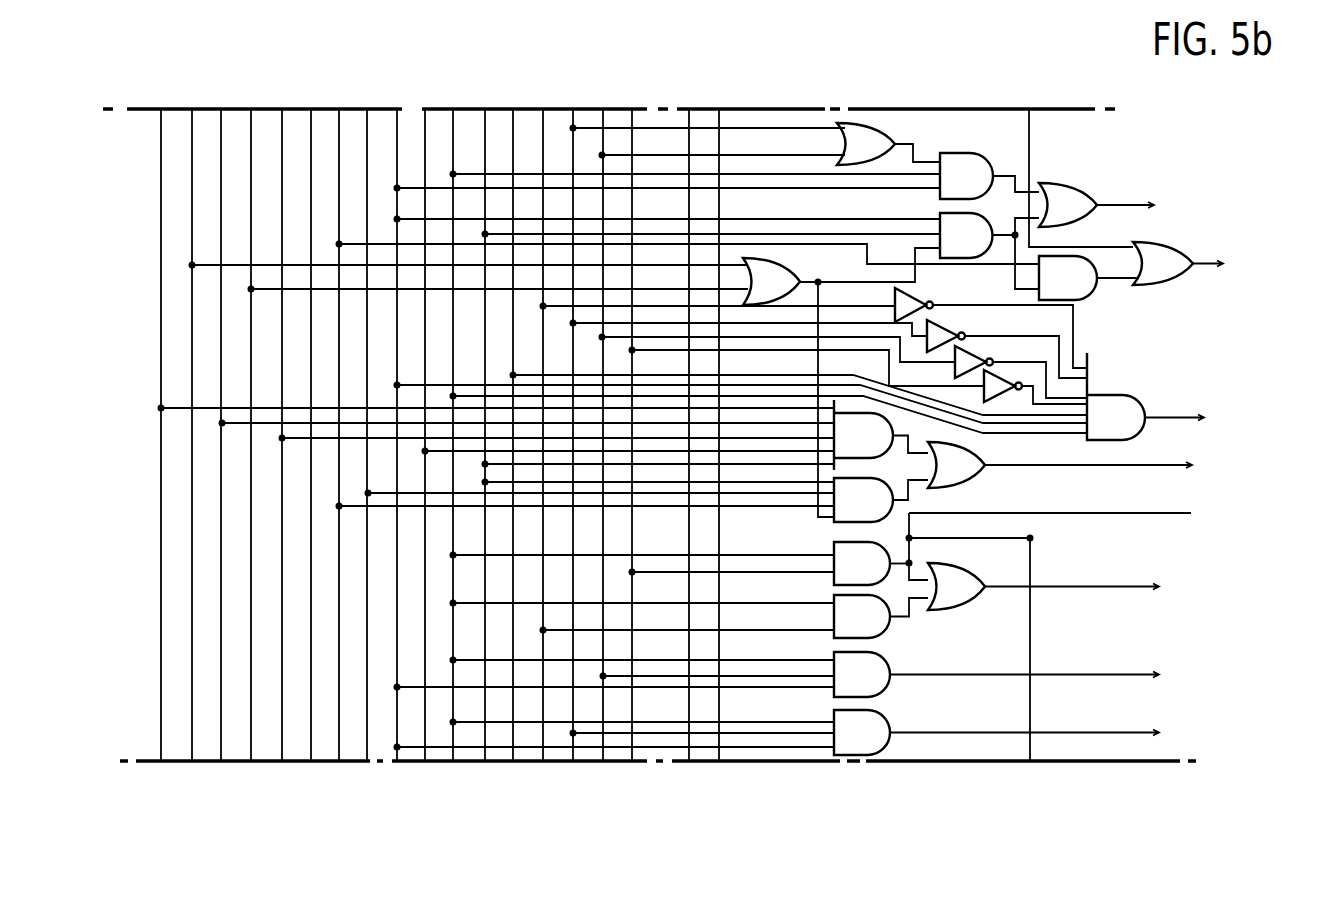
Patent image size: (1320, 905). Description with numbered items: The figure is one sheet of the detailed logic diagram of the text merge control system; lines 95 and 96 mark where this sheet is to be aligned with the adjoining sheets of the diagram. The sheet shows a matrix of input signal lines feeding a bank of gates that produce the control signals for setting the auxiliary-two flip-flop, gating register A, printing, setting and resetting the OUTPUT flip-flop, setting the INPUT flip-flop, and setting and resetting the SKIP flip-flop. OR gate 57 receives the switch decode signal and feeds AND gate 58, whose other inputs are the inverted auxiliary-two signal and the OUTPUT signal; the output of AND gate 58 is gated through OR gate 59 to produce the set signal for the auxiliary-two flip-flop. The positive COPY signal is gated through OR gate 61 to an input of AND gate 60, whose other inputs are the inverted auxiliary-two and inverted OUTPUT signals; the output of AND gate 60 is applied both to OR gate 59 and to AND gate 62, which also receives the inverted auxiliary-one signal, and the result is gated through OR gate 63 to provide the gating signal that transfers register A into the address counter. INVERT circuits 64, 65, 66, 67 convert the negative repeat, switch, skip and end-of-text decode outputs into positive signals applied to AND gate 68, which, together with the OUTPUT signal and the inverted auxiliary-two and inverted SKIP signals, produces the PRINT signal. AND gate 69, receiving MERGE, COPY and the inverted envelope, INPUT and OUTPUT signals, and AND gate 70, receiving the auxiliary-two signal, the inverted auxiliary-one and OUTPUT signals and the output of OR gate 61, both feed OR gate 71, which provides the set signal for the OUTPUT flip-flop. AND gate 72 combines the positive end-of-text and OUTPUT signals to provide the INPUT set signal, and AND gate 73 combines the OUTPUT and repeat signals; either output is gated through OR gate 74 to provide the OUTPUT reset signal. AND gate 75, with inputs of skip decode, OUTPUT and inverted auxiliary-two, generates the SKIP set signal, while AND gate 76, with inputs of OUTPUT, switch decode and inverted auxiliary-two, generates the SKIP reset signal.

The OR gate 57 is at (885, 131).
The AND gate 58 is at (988, 168).
The OR gate 59 is at (1077, 190).
The AND gate 60 is at (986, 224).
The OR gate 61 is at (790, 273).
The AND gate 62 is at (1090, 296).
The OR gate 63 is at (1174, 281).
The INVERT circuit 64 is at (912, 293).
The INVERT circuit 65 is at (950, 327).
The INVERT circuit 66 is at (980, 356).
The INVERT circuit 67 is at (1005, 370).
The AND gate 68 is at (1122, 398).
The AND gate 69 is at (878, 453).
The AND gate 70 is at (870, 518).
The OR gate 71 is at (975, 452).
The AND gate 72 is at (873, 575).
The AND gate 73 is at (885, 630).
The OR gate 74 is at (975, 573).
The AND gate 75 is at (887, 668).
The AND gate 76 is at (885, 723).
The alignment line 95 is at (161, 518).
The alignment line 96 is at (718, 543).